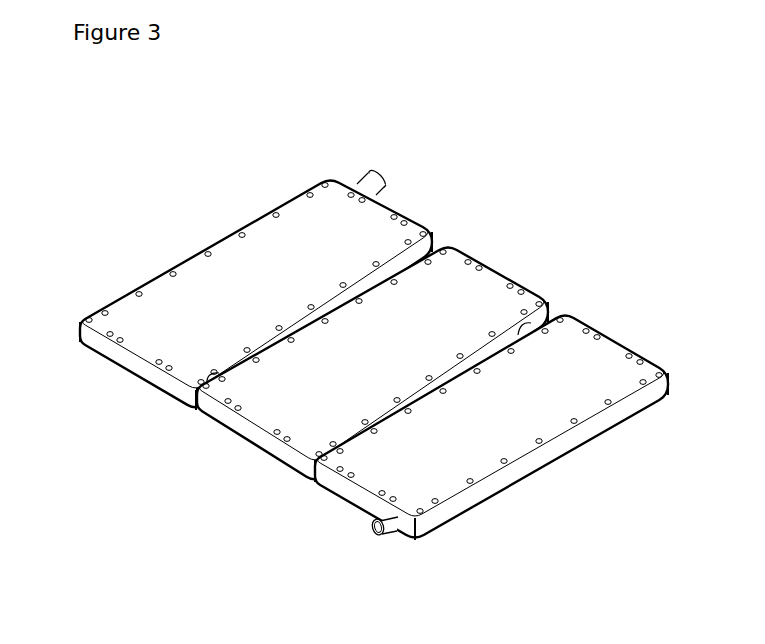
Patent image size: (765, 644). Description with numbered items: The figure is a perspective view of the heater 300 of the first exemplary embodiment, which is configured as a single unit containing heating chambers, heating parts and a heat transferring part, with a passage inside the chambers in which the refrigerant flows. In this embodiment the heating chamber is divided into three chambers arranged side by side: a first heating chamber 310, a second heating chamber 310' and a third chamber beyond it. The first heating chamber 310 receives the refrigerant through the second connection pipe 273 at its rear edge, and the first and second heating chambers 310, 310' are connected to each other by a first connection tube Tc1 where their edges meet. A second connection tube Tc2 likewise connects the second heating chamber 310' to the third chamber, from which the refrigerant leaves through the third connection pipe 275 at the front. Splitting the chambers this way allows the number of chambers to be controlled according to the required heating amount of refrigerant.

The heater 300 is at (246, 158).
The second connection pipe 273 is at (371, 182).
The third connection pipe 275 is at (393, 536).
The first heating chamber 310 is at (252, 295).
The second heating chamber 310' is at (367, 365).
The first connection tube Tc1 is at (217, 372).
The second connection tube Tc2 is at (531, 321).